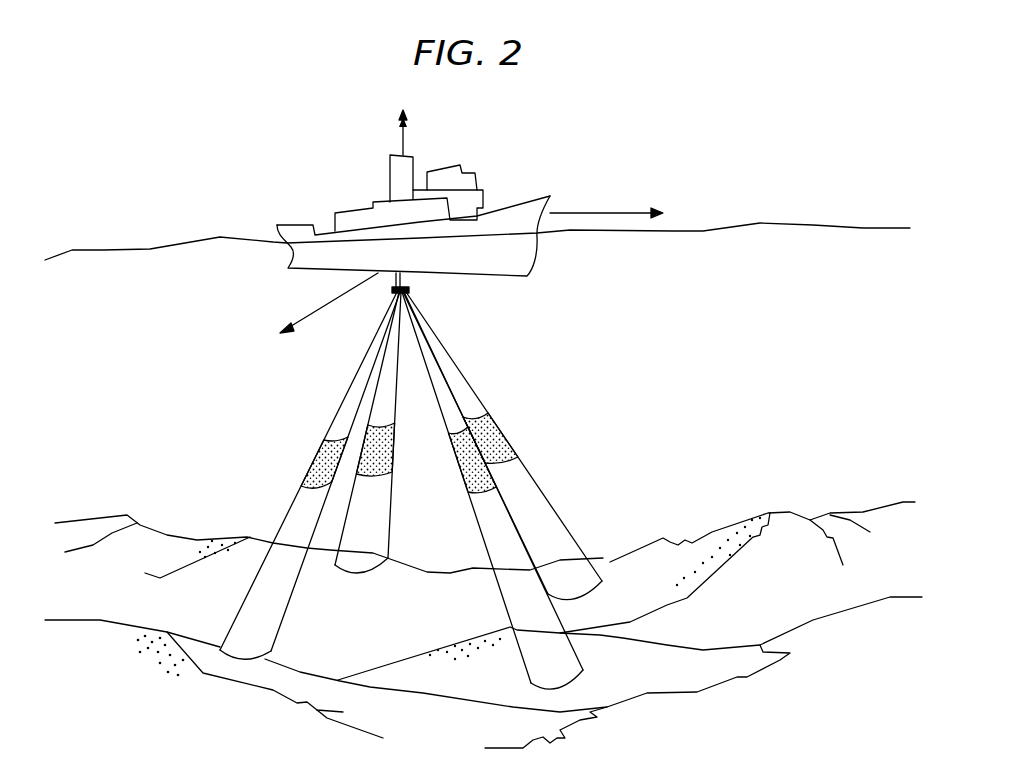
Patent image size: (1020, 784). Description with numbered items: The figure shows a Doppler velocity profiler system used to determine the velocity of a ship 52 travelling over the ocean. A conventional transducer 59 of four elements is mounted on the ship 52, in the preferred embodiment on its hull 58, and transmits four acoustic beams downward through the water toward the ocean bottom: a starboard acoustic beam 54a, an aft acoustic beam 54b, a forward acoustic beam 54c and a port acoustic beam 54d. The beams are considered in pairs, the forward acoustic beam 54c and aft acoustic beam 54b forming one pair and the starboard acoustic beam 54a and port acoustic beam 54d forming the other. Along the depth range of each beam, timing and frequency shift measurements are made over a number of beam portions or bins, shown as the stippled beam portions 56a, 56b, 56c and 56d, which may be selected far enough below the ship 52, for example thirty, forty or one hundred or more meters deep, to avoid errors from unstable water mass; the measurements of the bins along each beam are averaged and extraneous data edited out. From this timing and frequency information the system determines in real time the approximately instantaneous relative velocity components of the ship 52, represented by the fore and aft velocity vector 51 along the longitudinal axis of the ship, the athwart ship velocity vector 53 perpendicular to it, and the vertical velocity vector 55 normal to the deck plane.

The fore and aft velocity vector 51 is at (596, 209).
The ship 52 is at (513, 210).
The athwart ship velocity vector 53 is at (313, 312).
The starboard acoustic beam 54a is at (237, 607).
The aft acoustic beam 54b is at (378, 570).
The forward acoustic beam 54c is at (577, 657).
The port acoustic beam 54d is at (577, 540).
The vertical velocity vector 55 is at (403, 145).
The beam portion 56a is at (318, 460).
The beam portion 56b is at (393, 442).
The beam portion 56c is at (455, 488).
The beam portion 56d is at (500, 426).
The hull 58 is at (453, 276).
The transducer 59 is at (390, 272).